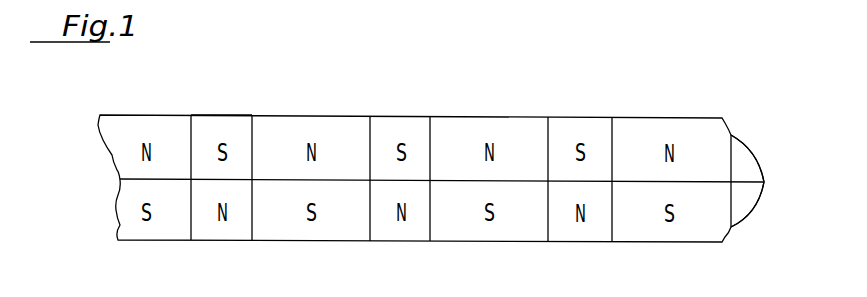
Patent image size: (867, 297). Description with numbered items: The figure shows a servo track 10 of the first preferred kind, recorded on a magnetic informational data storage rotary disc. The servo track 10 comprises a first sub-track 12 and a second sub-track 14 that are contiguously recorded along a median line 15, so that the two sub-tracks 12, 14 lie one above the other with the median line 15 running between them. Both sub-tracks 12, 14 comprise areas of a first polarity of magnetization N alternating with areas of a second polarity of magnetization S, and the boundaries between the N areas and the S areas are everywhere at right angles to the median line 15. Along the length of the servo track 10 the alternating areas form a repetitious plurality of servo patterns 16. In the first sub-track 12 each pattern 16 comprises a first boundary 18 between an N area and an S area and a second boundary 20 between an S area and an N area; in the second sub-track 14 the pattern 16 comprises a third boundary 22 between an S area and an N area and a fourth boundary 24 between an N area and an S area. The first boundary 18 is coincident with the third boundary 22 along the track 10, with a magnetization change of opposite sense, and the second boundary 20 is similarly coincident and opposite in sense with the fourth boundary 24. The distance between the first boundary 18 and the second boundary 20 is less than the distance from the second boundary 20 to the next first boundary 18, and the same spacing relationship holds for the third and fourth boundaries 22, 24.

The servo track 10 is at (80, 113).
The first sub-track 12 is at (752, 160).
The second sub-track 14 is at (742, 208).
The median line 15 is at (764, 182).
The servo pattern 16 is at (193, 68).
The first boundary 18 is at (191, 115).
The second boundary 20 is at (252, 115).
The third boundary 22 is at (191, 240).
The fourth boundary 24 is at (252, 241).